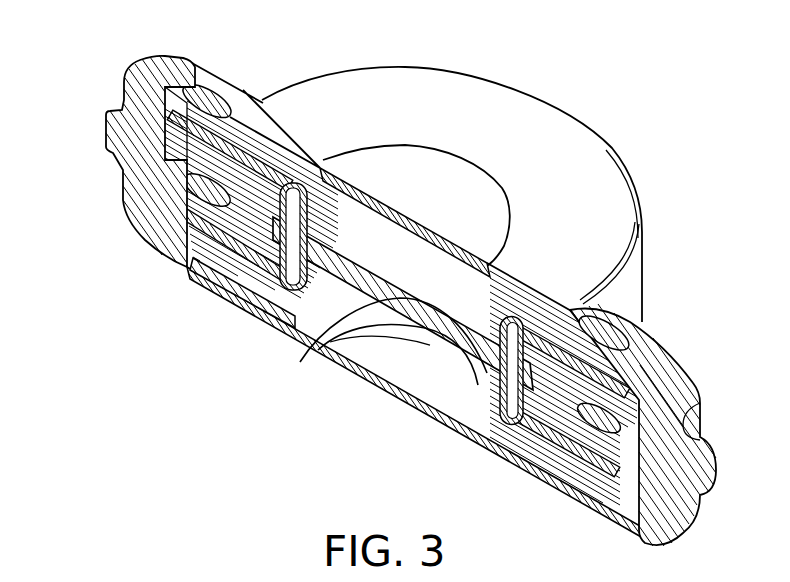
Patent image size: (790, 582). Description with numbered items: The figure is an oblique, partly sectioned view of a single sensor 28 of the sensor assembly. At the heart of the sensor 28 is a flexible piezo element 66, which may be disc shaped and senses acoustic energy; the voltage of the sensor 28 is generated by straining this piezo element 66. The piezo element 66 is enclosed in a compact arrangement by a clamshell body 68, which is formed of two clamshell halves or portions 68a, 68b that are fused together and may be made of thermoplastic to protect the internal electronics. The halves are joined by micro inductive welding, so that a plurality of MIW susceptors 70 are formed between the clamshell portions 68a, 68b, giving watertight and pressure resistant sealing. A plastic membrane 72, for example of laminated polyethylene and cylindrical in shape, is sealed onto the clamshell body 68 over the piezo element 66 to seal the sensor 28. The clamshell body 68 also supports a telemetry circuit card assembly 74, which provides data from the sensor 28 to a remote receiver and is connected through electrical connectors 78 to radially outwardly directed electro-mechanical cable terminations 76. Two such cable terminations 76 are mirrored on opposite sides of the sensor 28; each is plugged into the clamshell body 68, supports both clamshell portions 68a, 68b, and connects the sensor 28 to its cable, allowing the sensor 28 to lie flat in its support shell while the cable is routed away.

The sensor 28 is at (121, 55).
The flexible piezo element 66 is at (413, 365).
The clamshell body 68 is at (275, 300).
The clamshell portion 68a is at (530, 447).
The clamshell portion 68b is at (550, 325).
The MIW susceptors 70 is at (267, 220).
The plastic membrane 72 is at (536, 142).
The telemetry circuit card assembly 74 is at (360, 312).
The electro-mechanical cable terminations 76 is at (143, 157).
The electrical connectors 78 is at (180, 222).